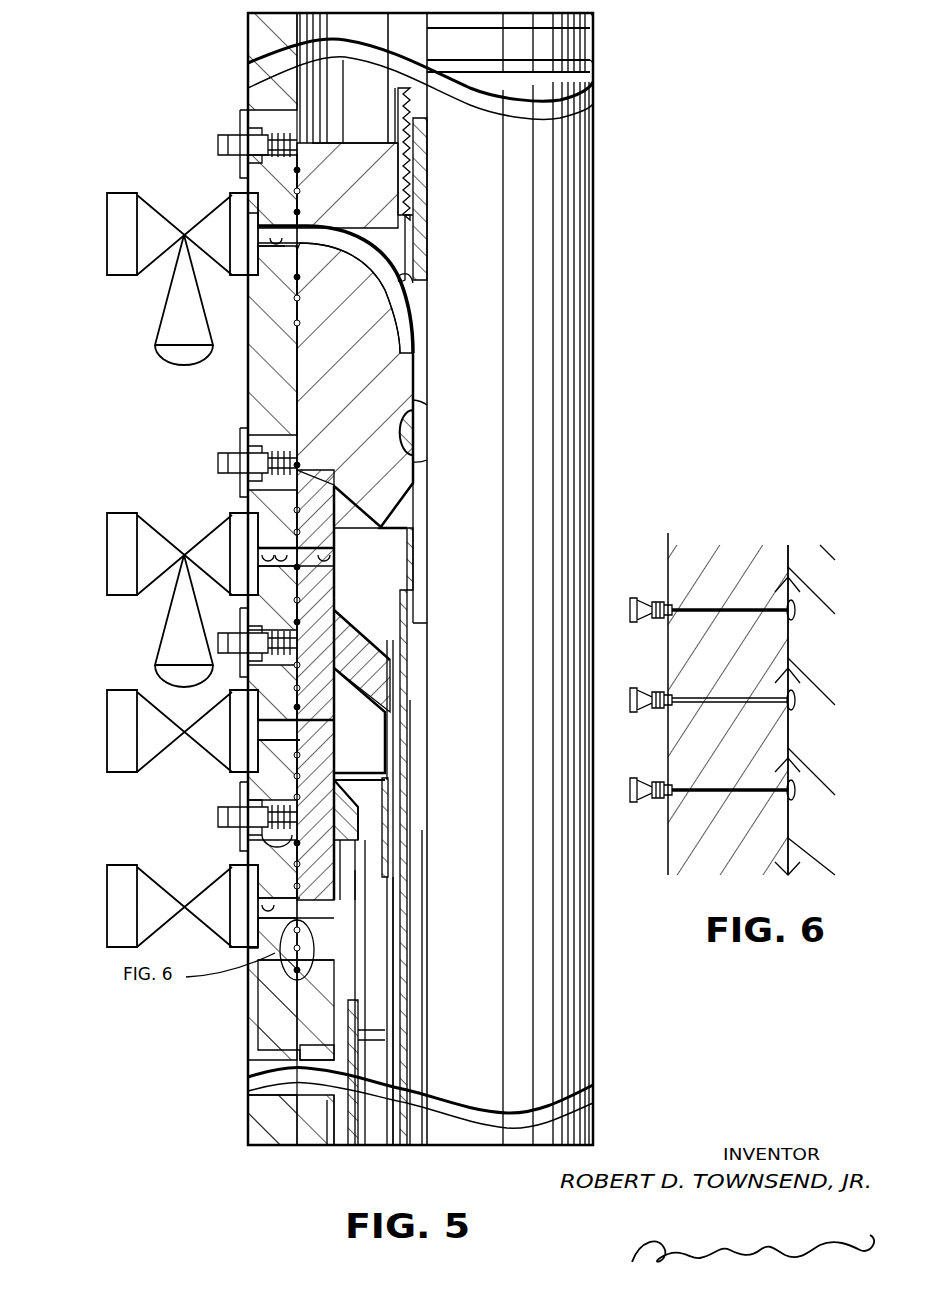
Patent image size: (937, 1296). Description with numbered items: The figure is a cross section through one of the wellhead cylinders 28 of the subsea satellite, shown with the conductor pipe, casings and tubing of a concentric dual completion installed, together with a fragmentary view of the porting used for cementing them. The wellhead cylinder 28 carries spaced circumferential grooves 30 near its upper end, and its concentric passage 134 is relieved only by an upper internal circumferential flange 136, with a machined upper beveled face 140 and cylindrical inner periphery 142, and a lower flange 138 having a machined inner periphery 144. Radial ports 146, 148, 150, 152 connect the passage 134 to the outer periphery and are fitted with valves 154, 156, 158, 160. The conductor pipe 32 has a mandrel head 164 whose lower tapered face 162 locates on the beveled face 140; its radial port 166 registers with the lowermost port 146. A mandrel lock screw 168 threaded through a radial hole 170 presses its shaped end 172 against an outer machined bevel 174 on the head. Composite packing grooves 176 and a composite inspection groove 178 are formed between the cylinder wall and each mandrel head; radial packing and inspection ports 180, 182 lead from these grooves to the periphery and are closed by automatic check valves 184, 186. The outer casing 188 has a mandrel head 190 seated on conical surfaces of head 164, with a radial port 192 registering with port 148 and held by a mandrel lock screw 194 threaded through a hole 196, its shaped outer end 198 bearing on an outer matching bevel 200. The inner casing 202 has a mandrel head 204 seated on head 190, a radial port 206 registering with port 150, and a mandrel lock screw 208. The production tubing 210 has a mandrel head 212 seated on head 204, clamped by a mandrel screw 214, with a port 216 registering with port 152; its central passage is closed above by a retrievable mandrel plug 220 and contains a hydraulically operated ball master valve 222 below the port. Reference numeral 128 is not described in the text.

In FIG. 5, the wellhead cylinder 28 is at (560, 152).
In FIG. 6, the wellhead cylinder 28 is at (740, 847).
In FIG. 5, the circumferential grooves 30 is at (585, 72).
In FIG. 5, the conductor pipe 32 is at (300, 1048).
In FIG. 5, the threaded portion 128 is at (408, 90).
In FIG. 5, the concentric passage 134 is at (310, 30).
In FIG. 5, the internal circumferential flange 136 is at (280, 1022).
In FIG. 5, the lower flange 138 is at (300, 1118).
In FIG. 5, the upper beveled face 140 is at (300, 1000).
In FIG. 5, the cylindrical inner periphery 142 is at (345, 1034).
In FIG. 5, the inner periphery 144 is at (328, 1145).
In FIG. 5, the radial port 146 is at (265, 930).
In FIG. 5, the radial port 148 is at (232, 757).
In FIG. 5, the radial port 150 is at (272, 548).
In FIG. 5, the radial port 152 is at (256, 278).
In FIG. 5, the valve 154 is at (107, 920).
In FIG. 5, the valve 156 is at (107, 743).
In FIG. 5, the valve 158 is at (107, 578).
In FIG. 5, the valve 160 is at (107, 240).
In FIG. 5, the lower tapered face 162 is at (358, 1022).
In FIG. 5, the mandrel head 164 is at (330, 950).
In FIG. 6, the mandrel head 164 is at (836, 847).
In FIG. 5, the radial port 166 is at (345, 905).
In FIG. 5, the mandrel lock screw 168 is at (218, 817).
In FIG. 5, the radial hole 170 is at (248, 838).
In FIG. 5, the shaped end 172 is at (385, 800).
In FIG. 5, the outer machined bevel 174 is at (375, 838).
In FIG. 5, the composite packing grooves 176 is at (299, 756).
In FIG. 6, the composite packing grooves 176 is at (796, 610).
In FIG. 5, the composite inspection groove 178 is at (326, 705).
In FIG. 6, the composite inspection groove 178 is at (796, 700).
In FIG. 6, the radial packing port 180 is at (741, 608).
In FIG. 6, the radial inspection port 182 is at (746, 698).
In FIG. 6, the automatic check valve 184 is at (652, 604).
In FIG. 6, the automatic check valve 186 is at (652, 694).
In FIG. 5, the outer casing 188 is at (365, 986).
In FIG. 5, the mandrel head 190 is at (359, 754).
In FIG. 5, the radial port 192 is at (357, 819).
In FIG. 5, the mandrel lock screw 194 is at (218, 650).
In FIG. 5, the hole 196 is at (297, 636).
In FIG. 5, the shaped outer end 198 is at (335, 612).
In FIG. 5, the outer matching bevel 200 is at (335, 627).
In FIG. 5, the inner casing 202 is at (398, 858).
In FIG. 5, the mandrel head 204 is at (320, 588).
In FIG. 5, the radial port 206 is at (330, 556).
In FIG. 5, the mandrel lock screw 208 is at (218, 460).
In FIG. 5, the production tubing 210 is at (416, 660).
In FIG. 5, the mandrel head 212 is at (375, 369).
In FIG. 5, the mandrel screw 214 is at (218, 148).
In FIG. 5, the port 216 is at (402, 282).
In FIG. 5, the retrievable mandrel plug 220 is at (422, 135).
In FIG. 5, the hydraulically operated ball master valve 222 is at (412, 433).